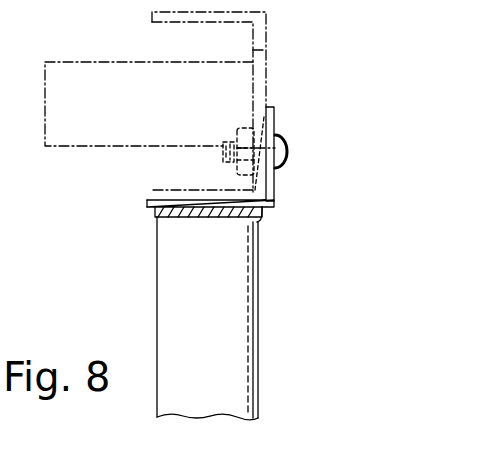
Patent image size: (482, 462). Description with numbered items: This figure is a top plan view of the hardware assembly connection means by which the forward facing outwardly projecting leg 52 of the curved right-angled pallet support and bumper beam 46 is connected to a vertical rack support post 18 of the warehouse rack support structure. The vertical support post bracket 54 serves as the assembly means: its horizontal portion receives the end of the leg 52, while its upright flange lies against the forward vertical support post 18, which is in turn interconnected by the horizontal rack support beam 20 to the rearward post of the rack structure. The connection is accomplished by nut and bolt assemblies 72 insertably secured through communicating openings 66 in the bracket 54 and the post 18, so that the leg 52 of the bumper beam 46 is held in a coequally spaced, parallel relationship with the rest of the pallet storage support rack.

The vertical rack support post 18 is at (266, 43).
The horizontal rack support beam 20 is at (120, 62).
The curved right-angled pallet support and bumper beam 46 is at (157, 320).
The forward facing outwardly projecting leg 52 is at (258, 325).
The vertical support post bracket 54 is at (275, 192).
The communicating openings 66 is at (274, 121).
The nut and bolt assemblies 72 is at (282, 152).